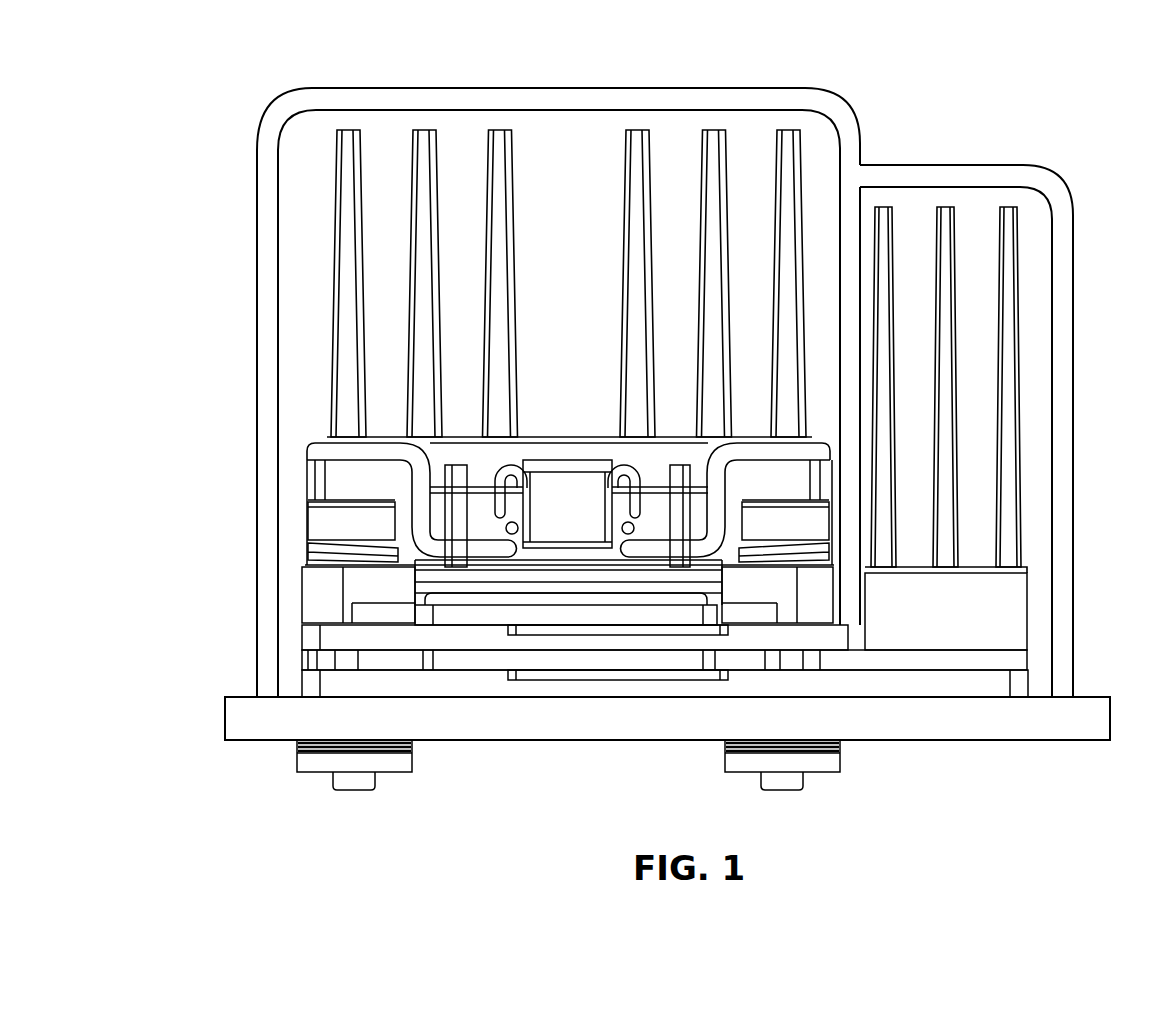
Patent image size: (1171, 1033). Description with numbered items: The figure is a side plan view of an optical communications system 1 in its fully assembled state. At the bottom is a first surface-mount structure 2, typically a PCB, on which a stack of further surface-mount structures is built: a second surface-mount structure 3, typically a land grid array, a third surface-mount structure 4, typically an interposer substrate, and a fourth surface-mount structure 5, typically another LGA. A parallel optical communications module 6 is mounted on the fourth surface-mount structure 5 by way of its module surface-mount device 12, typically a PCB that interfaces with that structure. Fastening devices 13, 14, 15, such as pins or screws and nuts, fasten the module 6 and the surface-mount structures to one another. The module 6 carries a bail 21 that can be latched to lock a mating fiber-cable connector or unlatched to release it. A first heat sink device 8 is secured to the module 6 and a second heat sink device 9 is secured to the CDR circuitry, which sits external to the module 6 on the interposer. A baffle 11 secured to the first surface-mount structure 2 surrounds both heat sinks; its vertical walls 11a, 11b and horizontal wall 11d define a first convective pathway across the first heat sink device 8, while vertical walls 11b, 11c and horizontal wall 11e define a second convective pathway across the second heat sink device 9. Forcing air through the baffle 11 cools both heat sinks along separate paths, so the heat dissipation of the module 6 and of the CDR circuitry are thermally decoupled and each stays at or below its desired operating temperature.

The optical communications system 1 is at (150, 97).
The first surface-mount structure 2 is at (1088, 697).
The second surface-mount structure 3 is at (920, 685).
The third surface-mount structure 4 is at (703, 667).
The fourth surface-mount structure 5 is at (603, 635).
The parallel optical communications module 6 is at (355, 575).
The first heat sink device 8 is at (506, 147).
The second heat sink device 9 is at (1015, 225).
The baffle 11 is at (785, 89).
The vertical wall 11a is at (268, 264).
The vertical wall 11b is at (848, 221).
The vertical wall 11c is at (1060, 303).
The horizontal wall 11d is at (557, 112).
The horizontal wall 11e is at (921, 172).
The module surface-mount device 12 is at (463, 617).
The fastening device 13 is at (360, 790).
The fastening device 14 is at (310, 760).
The fastening device 15 is at (322, 518).
The bail 21 is at (321, 450).